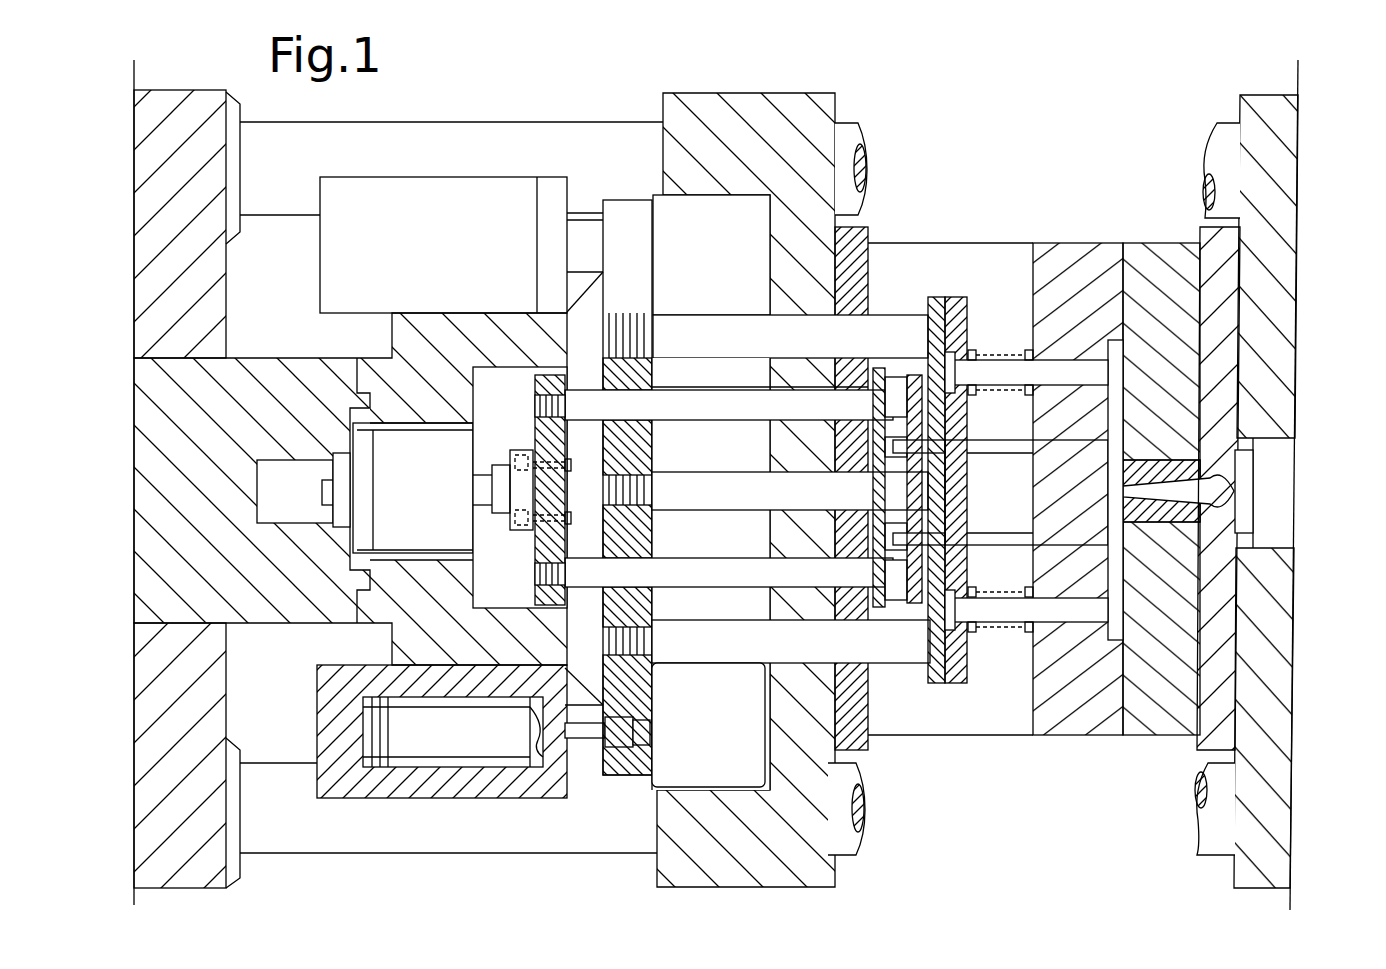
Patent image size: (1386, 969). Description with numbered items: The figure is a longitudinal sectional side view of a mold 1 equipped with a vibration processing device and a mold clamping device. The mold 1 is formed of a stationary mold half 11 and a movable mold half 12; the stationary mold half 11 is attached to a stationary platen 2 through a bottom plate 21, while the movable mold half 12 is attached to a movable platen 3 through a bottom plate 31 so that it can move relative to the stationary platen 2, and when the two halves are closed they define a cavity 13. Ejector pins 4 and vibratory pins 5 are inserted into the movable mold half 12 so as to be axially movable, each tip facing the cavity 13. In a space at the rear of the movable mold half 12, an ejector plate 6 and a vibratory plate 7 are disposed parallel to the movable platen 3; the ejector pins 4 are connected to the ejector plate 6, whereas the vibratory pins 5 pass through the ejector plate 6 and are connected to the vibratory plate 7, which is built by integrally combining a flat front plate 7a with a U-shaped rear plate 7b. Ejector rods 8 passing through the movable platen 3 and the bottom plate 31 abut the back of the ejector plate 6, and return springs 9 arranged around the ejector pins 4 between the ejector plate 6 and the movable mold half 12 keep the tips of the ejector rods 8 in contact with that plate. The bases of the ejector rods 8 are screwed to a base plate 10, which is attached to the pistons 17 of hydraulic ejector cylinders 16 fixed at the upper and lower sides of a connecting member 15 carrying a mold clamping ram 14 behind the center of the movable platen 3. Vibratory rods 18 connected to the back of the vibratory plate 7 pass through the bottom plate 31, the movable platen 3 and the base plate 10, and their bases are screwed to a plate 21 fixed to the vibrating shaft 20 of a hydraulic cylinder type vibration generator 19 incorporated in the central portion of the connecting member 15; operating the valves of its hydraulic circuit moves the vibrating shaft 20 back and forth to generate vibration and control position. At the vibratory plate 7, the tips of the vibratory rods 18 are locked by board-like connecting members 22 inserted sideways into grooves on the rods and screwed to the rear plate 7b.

The mold 1 is at (1068, 210).
The stationary platen 2 is at (1272, 185).
The movable platen 3 is at (790, 147).
The ejector pins 4 is at (1012, 373).
The vibratory pins 5 is at (987, 447).
The ejector plate 6 is at (958, 295).
The vibratory plate 7 is at (924, 295).
The front plate 7a is at (910, 605).
The rear plate 7b is at (878, 608).
The ejector rods 8 is at (703, 640).
The return springs 9 is at (976, 398).
The base plate 10 is at (660, 453).
The stationary mold half 11 is at (1170, 320).
The movable mold half 12 is at (1040, 247).
The cavity 13 is at (1117, 373).
The mold clamping ram 14 is at (262, 572).
The connecting member 15 is at (442, 348).
The ejector cylinders 16 is at (466, 200).
The pistons 17 is at (479, 735).
The vibratory rods 18 is at (700, 580).
The vibration generator 19 is at (338, 418).
The vibrating shaft 20 is at (484, 482).
The plate 21 is at (552, 545).
The connecting member 22 is at (890, 372).
The bottom plate 31 is at (853, 270).